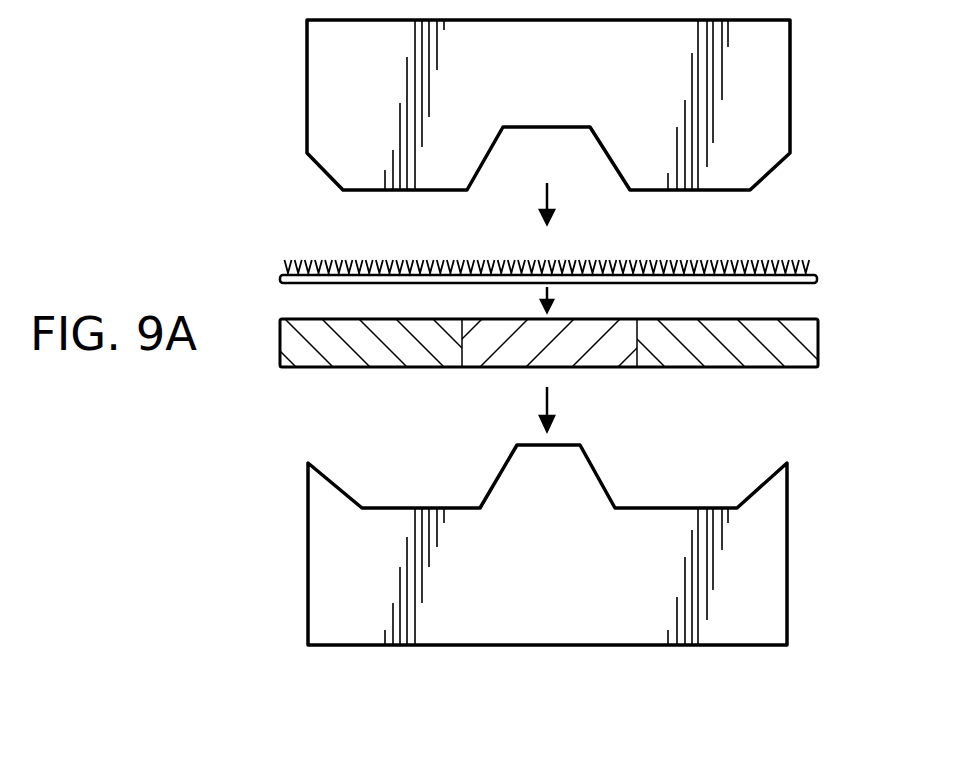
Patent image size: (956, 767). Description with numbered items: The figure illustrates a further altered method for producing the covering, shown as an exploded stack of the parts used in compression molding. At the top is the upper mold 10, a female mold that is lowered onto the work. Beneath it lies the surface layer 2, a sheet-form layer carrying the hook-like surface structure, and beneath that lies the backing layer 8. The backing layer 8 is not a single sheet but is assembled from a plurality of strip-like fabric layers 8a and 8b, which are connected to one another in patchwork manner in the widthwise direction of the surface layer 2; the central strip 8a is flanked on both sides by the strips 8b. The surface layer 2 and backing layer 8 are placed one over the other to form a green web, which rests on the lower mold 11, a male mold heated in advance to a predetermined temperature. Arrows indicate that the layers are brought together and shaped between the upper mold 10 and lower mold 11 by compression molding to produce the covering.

The upper mold 10 is at (790, 125).
The surface layer 2 is at (818, 278).
The backing layer 8 is at (564, 369).
The strip-like fabric layer 8a is at (512, 368).
The strip-like fabric layer 8b is at (373, 368).
The lower mold 11 is at (787, 601).